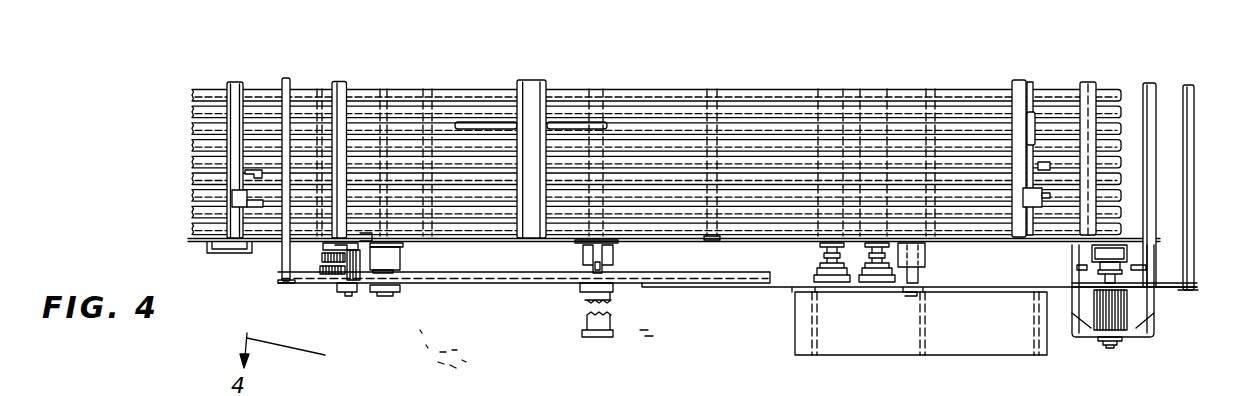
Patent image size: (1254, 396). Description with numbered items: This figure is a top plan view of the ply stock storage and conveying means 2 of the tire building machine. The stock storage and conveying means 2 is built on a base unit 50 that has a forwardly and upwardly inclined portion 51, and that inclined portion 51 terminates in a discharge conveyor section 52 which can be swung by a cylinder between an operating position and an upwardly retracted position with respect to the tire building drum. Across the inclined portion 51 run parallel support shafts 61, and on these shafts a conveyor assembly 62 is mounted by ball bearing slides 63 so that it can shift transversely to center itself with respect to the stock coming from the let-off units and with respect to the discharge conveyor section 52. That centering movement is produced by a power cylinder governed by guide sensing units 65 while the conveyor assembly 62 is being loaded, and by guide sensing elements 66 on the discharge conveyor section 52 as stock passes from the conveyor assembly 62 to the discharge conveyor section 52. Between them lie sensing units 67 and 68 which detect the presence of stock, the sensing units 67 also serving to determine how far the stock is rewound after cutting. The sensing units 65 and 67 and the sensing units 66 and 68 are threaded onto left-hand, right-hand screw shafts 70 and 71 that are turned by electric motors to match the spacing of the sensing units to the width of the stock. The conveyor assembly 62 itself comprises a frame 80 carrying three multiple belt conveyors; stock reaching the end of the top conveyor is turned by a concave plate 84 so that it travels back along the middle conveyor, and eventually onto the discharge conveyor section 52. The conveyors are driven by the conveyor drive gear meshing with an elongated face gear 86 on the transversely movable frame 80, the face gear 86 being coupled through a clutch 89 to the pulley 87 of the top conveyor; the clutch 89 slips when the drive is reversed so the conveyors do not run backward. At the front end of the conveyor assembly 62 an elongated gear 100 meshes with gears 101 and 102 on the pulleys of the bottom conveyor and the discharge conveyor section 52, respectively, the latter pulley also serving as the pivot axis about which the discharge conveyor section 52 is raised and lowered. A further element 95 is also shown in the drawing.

The stock storage and conveying means 2 is at (722, 289).
The base unit 50 is at (980, 355).
The forwardly and upwardly inclined portion 51 is at (503, 285).
The discharge conveyor section 52 is at (195, 210).
The support shafts 61 is at (385, 297).
The conveyor assembly 62 is at (657, 97).
The ball bearing slides 63 is at (403, 265).
The guide sensing units 65 is at (1042, 206).
The guide sensing elements 66 is at (252, 208).
The sensing units 67 is at (1049, 164).
The sensing units 68 is at (262, 172).
The screw shaft 70 is at (1028, 167).
The screw shaft 71 is at (240, 222).
The frame 80 is at (803, 241).
The concave plate 84 is at (430, 363).
The elongated face gear 86 is at (1125, 307).
The pulley 87 is at (1120, 177).
The clutch 89 is at (1115, 258).
The support 95 is at (653, 363).
The elongated gear 100 is at (352, 272).
The gear 101 is at (325, 258).
The gear 102 is at (326, 272).